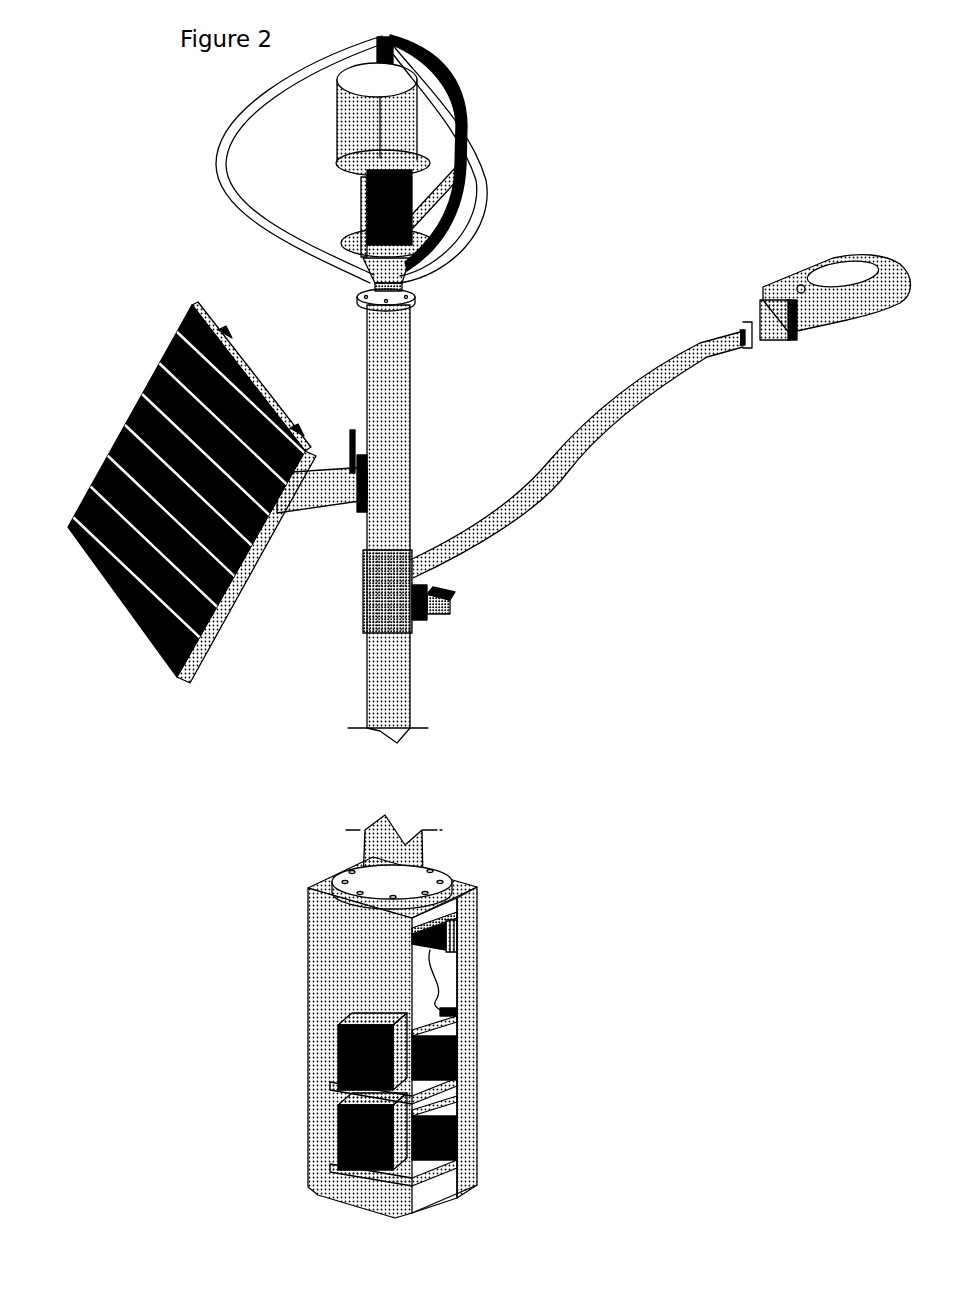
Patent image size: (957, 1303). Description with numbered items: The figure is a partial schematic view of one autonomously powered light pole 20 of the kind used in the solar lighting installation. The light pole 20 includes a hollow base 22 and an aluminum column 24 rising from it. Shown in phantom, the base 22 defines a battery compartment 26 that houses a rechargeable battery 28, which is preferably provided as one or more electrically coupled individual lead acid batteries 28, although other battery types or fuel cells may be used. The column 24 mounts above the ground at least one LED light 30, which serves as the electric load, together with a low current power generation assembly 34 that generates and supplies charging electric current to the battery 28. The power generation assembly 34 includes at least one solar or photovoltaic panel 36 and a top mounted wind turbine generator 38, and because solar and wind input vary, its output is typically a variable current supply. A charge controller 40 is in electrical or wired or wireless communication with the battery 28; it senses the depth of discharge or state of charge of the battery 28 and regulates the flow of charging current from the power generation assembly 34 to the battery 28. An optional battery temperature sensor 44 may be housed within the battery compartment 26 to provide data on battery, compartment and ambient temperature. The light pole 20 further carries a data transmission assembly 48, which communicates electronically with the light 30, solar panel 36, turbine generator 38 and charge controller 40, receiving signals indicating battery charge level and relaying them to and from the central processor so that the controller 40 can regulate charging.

The light pole 20 is at (652, 900).
The hollow base 22 is at (308, 950).
The aluminum column 24 is at (410, 678).
The battery compartment 26 is at (457, 975).
The rechargeable battery 28 is at (460, 1057).
The LED light 30 is at (830, 258).
The power generation assembly 34 is at (325, 173).
The solar panel 36 is at (110, 445).
The wind turbine generator 38 is at (487, 178).
The charge controller 40 is at (457, 940).
The battery temperature sensor 44 is at (457, 1013).
The data transmission assembly 48 is at (349, 437).